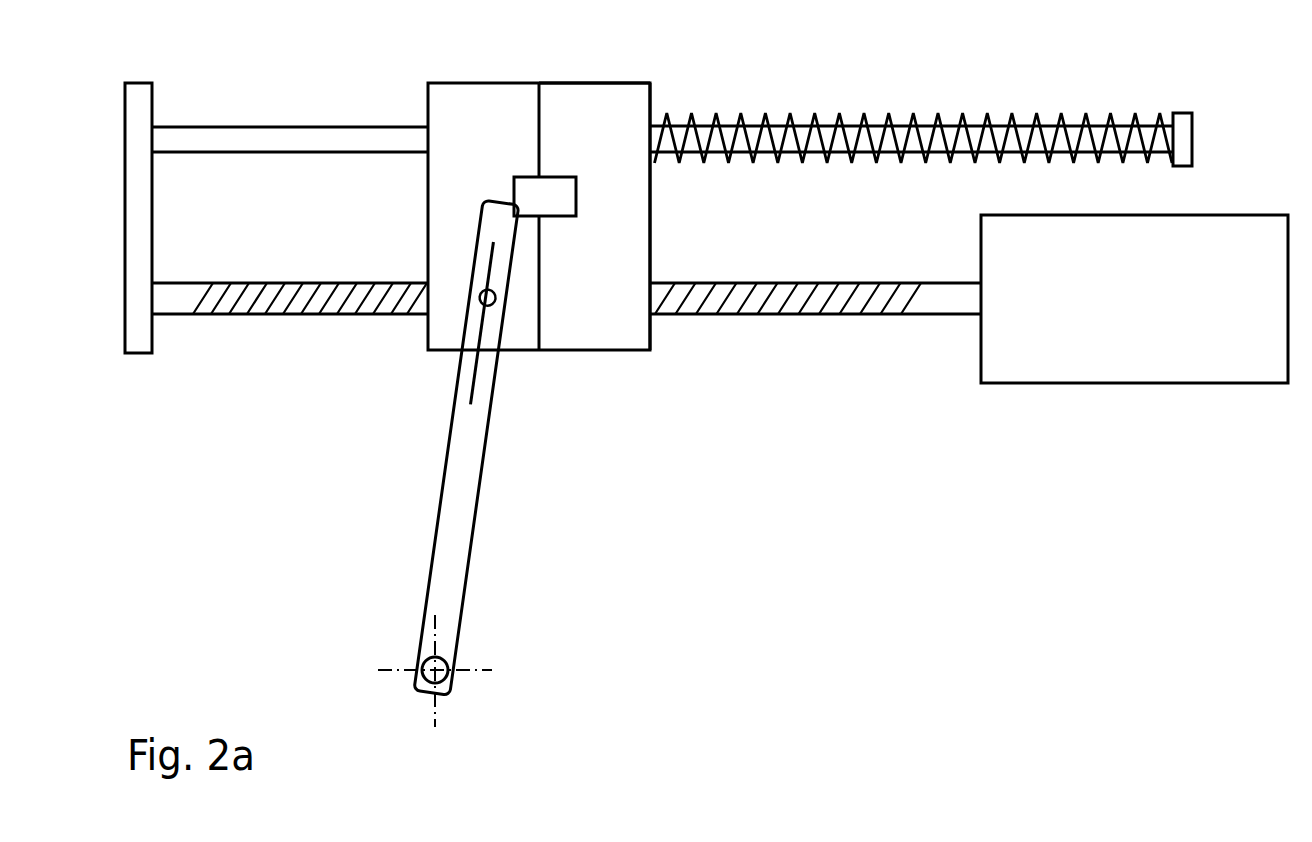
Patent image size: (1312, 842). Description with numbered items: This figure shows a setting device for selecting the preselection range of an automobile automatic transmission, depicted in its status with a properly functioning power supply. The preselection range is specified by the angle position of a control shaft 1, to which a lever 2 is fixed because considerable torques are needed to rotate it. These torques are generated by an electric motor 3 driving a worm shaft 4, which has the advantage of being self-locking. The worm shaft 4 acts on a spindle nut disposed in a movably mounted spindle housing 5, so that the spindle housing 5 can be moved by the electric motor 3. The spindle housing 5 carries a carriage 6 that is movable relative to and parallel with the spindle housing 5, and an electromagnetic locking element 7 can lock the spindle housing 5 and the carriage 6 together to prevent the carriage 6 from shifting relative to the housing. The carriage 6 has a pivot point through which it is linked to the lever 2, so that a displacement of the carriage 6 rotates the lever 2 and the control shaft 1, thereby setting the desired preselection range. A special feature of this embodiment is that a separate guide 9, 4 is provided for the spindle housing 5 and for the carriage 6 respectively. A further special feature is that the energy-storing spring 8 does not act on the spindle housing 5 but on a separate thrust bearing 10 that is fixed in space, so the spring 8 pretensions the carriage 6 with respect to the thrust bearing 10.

The control shaft 1 is at (422, 668).
The lever 2 is at (447, 550).
The electric motor 3 is at (1075, 358).
The worm shaft 4 is at (803, 300).
The spindle housing 5 is at (612, 105).
The carriage 6 is at (465, 95).
The electromagnetic locking element 7 is at (557, 197).
The spring 8 is at (860, 112).
The guide 9 is at (353, 138).
The thrust bearing 10 is at (1180, 133).